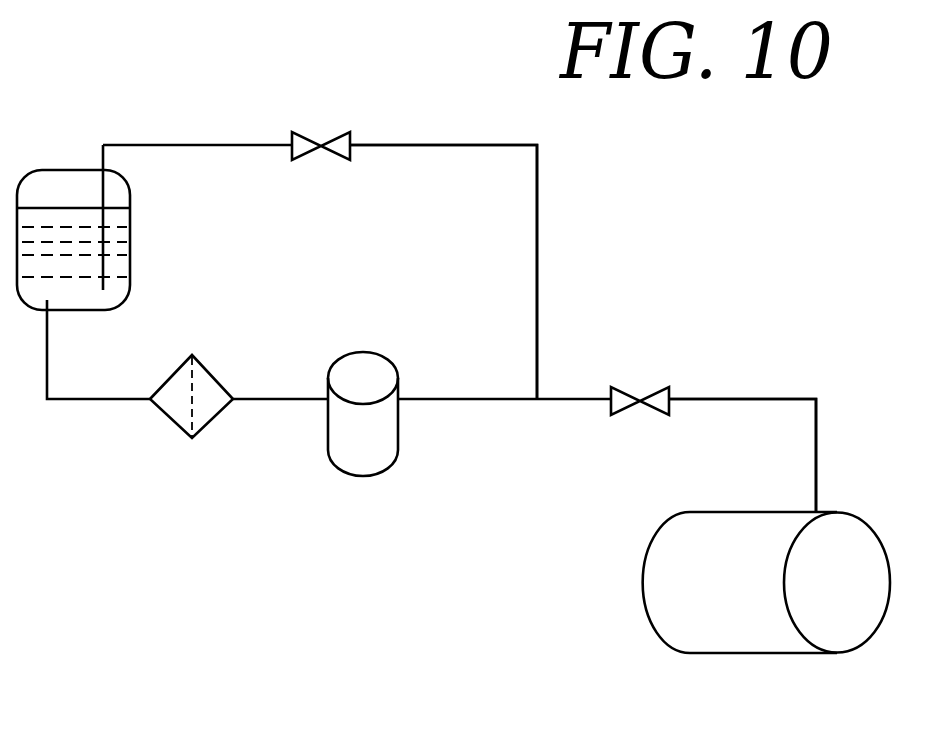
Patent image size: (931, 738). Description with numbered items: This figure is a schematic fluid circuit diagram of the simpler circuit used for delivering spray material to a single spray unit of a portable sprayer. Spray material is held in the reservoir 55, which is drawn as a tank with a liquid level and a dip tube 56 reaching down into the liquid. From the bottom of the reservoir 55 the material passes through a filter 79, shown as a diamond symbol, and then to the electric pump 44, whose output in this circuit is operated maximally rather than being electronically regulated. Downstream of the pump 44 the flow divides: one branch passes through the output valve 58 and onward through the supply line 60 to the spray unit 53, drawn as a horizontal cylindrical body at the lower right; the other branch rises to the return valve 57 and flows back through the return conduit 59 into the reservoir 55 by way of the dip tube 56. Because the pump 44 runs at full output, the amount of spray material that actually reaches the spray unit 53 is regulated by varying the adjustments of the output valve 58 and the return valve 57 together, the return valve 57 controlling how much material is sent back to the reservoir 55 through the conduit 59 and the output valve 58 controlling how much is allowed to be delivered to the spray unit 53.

The reservoir 55 is at (53, 170).
The dip tube 56 is at (80, 210).
The return valve 57 is at (305, 133).
The conduit 59 is at (424, 146).
The filter 79 is at (200, 365).
The pump 44 is at (377, 352).
The output valve 58 is at (622, 387).
The supply line 60 is at (697, 399).
The spray unit 53 is at (765, 653).